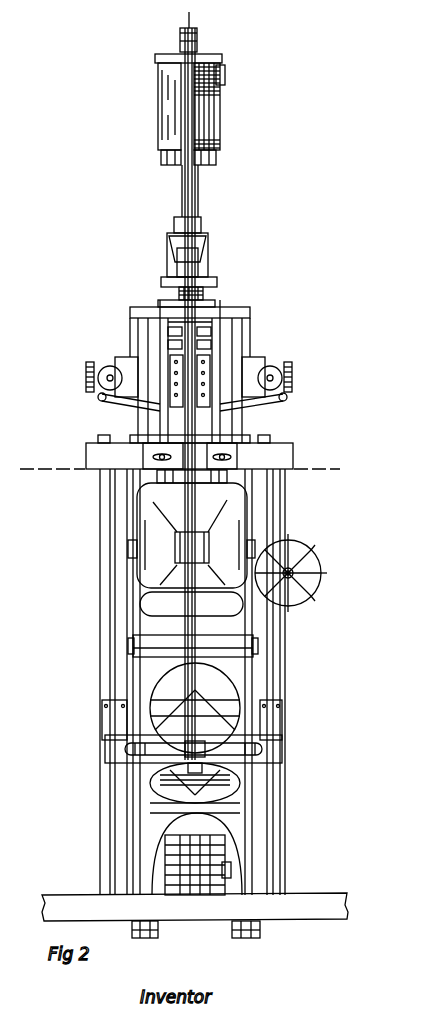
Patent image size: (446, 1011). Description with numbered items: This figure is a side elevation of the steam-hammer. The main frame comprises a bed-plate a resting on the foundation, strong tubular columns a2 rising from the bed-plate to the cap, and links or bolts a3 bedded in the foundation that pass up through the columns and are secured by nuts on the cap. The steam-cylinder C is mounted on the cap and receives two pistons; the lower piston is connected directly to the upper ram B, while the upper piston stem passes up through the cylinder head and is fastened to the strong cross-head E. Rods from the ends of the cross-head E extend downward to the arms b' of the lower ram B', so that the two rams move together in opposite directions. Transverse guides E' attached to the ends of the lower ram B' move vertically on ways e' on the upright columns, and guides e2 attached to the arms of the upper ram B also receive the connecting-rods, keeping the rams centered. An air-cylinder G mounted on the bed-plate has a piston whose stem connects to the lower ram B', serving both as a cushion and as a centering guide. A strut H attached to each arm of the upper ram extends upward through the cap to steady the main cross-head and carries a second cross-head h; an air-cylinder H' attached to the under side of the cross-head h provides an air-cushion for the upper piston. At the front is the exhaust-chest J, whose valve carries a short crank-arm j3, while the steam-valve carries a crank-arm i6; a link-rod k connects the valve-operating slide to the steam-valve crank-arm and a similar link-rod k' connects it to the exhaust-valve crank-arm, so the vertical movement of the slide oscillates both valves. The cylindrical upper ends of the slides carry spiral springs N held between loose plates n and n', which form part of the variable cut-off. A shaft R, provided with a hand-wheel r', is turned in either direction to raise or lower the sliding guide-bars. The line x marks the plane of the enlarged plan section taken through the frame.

The spiral spring N is at (185, 381).
The strut H is at (199, 26).
The second cross-head h is at (197, 35).
The air-cylinder H' is at (194, 109).
The cross-head E is at (197, 258).
The spring-plate n is at (205, 306).
The steam-cylinder C is at (133, 310).
The spring-plate n' is at (233, 361).
The exhaust-chest J is at (109, 367).
The crank-arm j3 is at (105, 385).
The link-rod k' is at (129, 408).
The pulley I is at (284, 373).
The crank-arm i6 is at (292, 385).
The link-rod k is at (253, 408).
The bed-plate a is at (189, 456).
The link or bolt a3 is at (270, 439).
The section line x is at (183, 469).
The column a2 is at (108, 855).
The upper ram B is at (192, 543).
The guide e2 is at (190, 551).
The shaft R is at (298, 546).
The hand-wheel r' is at (308, 564).
The way e' is at (190, 687).
The lower ram B' is at (238, 746).
The transverse guide E' is at (211, 749).
The arm b' is at (252, 767).
The air-cylinder G is at (197, 854).